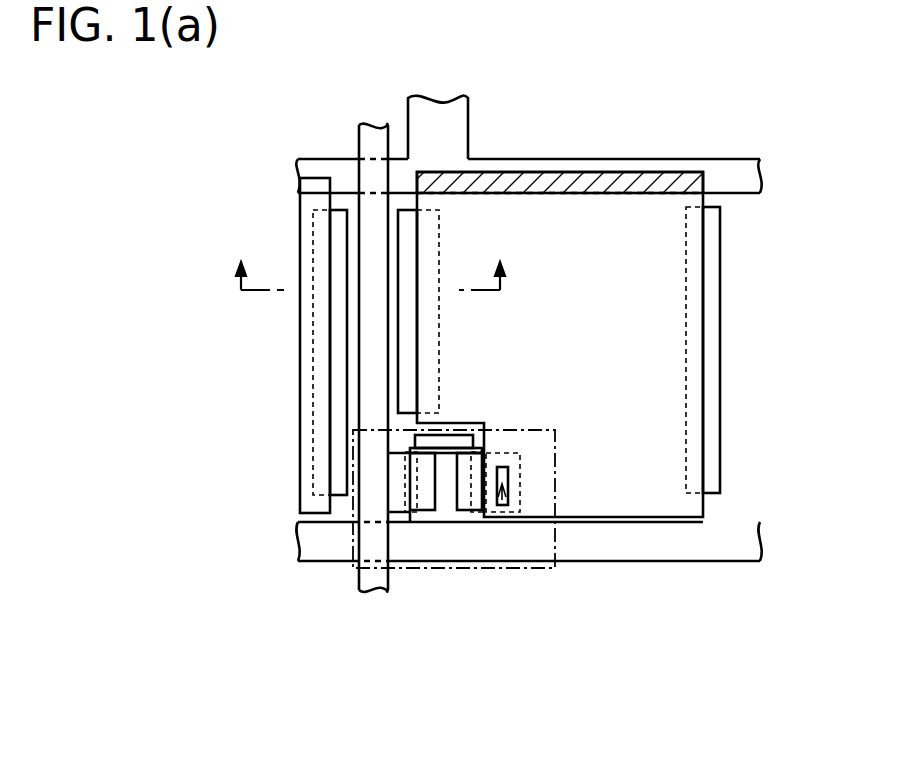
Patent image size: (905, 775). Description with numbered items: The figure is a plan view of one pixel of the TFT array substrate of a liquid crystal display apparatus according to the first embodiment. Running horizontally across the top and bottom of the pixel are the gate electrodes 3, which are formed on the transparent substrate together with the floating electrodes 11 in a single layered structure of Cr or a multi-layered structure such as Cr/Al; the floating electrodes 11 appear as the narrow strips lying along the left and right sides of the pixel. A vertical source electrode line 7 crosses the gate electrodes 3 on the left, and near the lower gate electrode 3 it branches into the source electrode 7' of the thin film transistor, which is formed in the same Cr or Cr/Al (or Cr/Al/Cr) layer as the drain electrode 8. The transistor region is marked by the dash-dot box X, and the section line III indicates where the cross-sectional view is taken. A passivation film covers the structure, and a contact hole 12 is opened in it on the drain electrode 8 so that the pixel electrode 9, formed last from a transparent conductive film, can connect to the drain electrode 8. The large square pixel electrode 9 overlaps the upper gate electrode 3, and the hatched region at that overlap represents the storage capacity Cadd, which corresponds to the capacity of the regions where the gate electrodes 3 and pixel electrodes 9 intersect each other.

The gate electrode 3 is at (720, 168).
The source electrode line 7 is at (347, 309).
The source electrode 7' is at (425, 587).
The drain electrode 8 is at (512, 484).
The pixel electrode 9 is at (653, 393).
The floating electrode 11 is at (428, 248).
The contact hole 12 is at (503, 500).
The storage capacity Cadd is at (618, 186).
The thin film transistor region X is at (450, 570).
The section line III- III is at (366, 286).